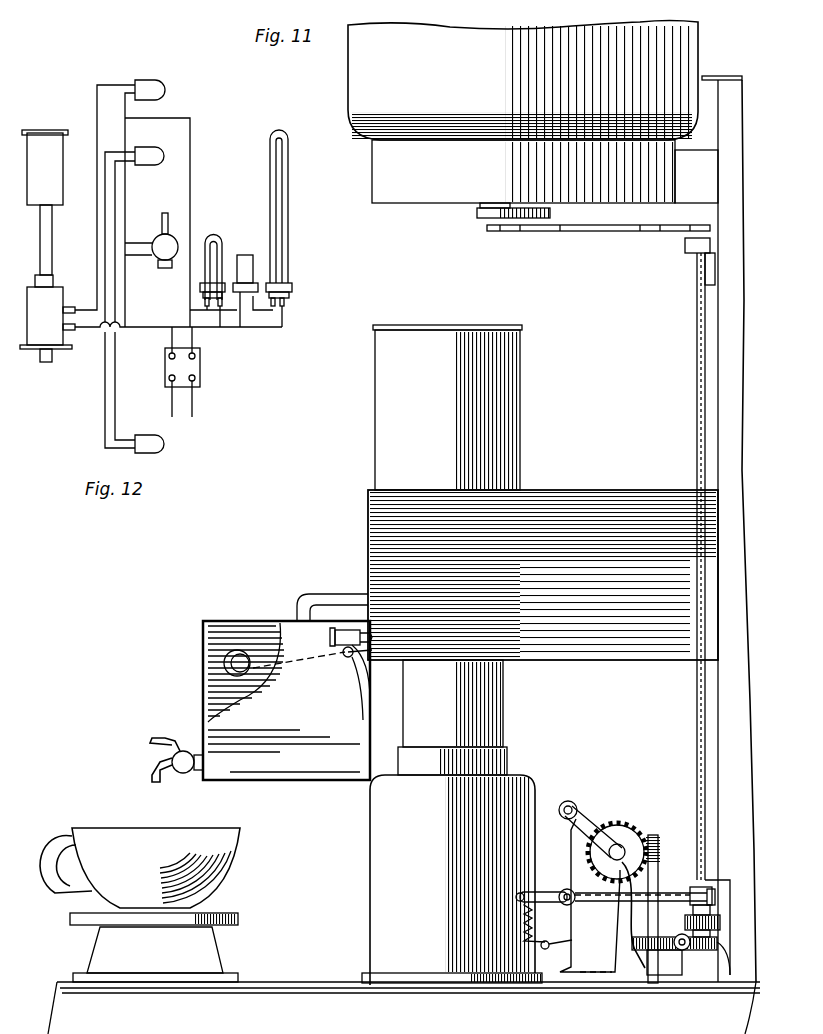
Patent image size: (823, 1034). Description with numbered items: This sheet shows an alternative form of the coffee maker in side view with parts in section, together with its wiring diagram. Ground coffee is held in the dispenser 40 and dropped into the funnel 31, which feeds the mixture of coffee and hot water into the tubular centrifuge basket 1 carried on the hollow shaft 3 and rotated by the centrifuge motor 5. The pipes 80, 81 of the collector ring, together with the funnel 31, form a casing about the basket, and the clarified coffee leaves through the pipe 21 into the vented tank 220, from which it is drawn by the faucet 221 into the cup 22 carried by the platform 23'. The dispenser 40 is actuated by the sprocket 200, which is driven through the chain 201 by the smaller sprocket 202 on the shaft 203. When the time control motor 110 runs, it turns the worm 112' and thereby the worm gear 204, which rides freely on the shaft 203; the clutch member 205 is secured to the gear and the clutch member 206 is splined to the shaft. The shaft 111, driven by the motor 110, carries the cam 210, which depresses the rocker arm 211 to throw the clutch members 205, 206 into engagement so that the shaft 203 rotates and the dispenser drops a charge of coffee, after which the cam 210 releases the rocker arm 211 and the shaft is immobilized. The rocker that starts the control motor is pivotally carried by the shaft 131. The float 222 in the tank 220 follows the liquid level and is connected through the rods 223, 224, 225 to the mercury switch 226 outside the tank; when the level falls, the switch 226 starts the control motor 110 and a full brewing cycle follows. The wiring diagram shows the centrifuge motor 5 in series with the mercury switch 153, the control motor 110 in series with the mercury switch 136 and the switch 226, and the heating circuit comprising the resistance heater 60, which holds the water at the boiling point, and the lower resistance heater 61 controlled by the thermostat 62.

In FIG. 12, the centrifuge basket 1 is at (45, 167).
In FIG. 12, the hollow shaft 3 is at (38, 248).
In FIG. 12, the motor 5 is at (47, 318).
In FIG. 11, the motor 5 is at (364, 899).
In FIG. 12, the mercury switch 153 is at (148, 80).
In FIG. 12, the mercury switch 136 is at (166, 152).
In FIG. 12, the mercury switch 226 is at (170, 440).
In FIG. 11, the mercury switch 226 is at (350, 600).
In FIG. 12, the time control motor 110 is at (158, 262).
In FIG. 11, the time control motor 110 is at (687, 962).
In FIG. 12, the resistance heater 60 is at (210, 240).
In FIG. 12, the thermostat 62 is at (237, 258).
In FIG. 12, the resistance heater 61 is at (289, 180).
In FIG. 11, the dispenser 40 is at (348, 82).
In FIG. 11, the sprocket 200 is at (555, 233).
In FIG. 11, the chain 201 is at (640, 233).
In FIG. 11, the sprocket 202 is at (690, 238).
In FIG. 11, the shaft 203 is at (697, 340).
In FIG. 11, the funnel 31 is at (378, 326).
In FIG. 11, the pipe 81 is at (521, 390).
In FIG. 11, the pipe 80 is at (505, 690).
In FIG. 11, the platform 23' is at (279, 880).
In FIG. 11, the cup 22 is at (135, 810).
In FIG. 11, the pipe 21 is at (300, 596).
In FIG. 11, the float 222 is at (238, 650).
In FIG. 11, the tank 220 is at (208, 668).
In FIG. 11, the rod 223 is at (310, 655).
In FIG. 11, the rod 224 is at (350, 664).
In FIG. 11, the rod 225 is at (362, 690).
In FIG. 11, the faucet 221 is at (150, 753).
In FIG. 11, the shaft 131 is at (577, 806).
In FIG. 11, the shaft 111 is at (623, 847).
In FIG. 11, the cam 210 is at (575, 884).
In FIG. 11, the rocker arm 211 is at (607, 950).
In FIG. 11, the clutch member 206 is at (692, 888).
In FIG. 11, the clutch member 205 is at (683, 911).
In FIG. 11, the worm 112' is at (663, 979).
In FIG. 11, the worm gear 204 is at (722, 950).